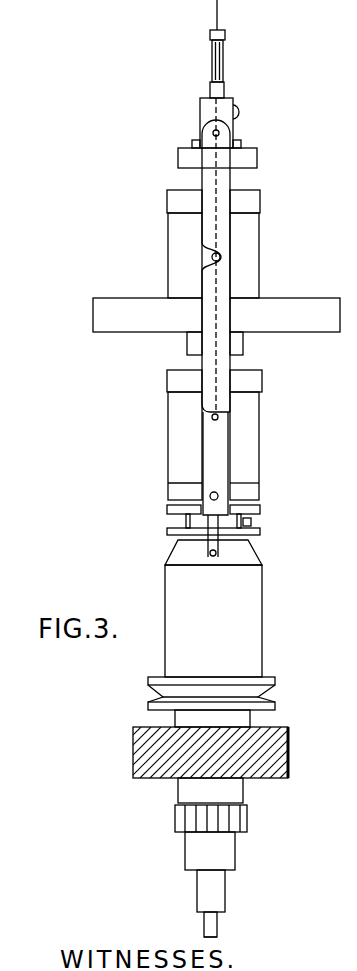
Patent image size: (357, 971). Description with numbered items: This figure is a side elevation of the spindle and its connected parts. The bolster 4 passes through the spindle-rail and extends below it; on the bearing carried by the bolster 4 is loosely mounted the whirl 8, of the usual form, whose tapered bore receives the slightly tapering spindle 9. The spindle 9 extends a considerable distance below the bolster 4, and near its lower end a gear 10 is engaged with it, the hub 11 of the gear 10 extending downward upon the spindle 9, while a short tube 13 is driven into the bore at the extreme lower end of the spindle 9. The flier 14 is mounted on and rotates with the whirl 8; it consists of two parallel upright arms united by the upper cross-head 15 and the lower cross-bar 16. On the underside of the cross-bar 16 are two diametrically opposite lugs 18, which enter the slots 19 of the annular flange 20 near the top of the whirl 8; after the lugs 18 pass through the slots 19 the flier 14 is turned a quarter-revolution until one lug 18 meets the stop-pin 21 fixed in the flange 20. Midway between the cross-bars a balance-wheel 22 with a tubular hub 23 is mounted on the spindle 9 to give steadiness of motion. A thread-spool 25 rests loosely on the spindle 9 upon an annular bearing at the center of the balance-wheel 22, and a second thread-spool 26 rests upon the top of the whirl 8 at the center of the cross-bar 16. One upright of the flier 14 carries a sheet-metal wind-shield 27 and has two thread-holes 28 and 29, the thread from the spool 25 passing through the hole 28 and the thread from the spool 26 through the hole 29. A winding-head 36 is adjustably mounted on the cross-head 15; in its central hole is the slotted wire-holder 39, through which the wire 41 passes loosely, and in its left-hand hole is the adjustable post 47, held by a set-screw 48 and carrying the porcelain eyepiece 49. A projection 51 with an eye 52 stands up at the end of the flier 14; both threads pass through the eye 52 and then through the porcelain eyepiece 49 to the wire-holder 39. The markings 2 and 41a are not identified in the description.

The upper end of axis line 41a is at (215, 17).
The wire-holder 39 is at (227, 33).
The porcelain eyepiece 49 is at (211, 66).
The adjustable post 47 is at (209, 90).
The winding-head 36 is at (199, 113).
The projection or eyepiece 51 is at (204, 130).
The eye or opening 52 is at (221, 133).
The set-screw 48 is at (242, 112).
The cross-head 15 is at (259, 158).
The wind-shield 27 is at (212, 343).
The thread-spool 25 is at (262, 205).
The thread-hole 28 is at (210, 257).
The balance-wheel 22 is at (107, 313).
The tubular hub 23 is at (245, 347).
The thread-spool 26 is at (263, 382).
The thread-hole 29 is at (211, 418).
The flier 14 is at (221, 447).
The lower cross-bar 16 is at (262, 510).
The stop-pin 21 is at (252, 522).
The annular flange 20 is at (165, 532).
The slots 19 is at (209, 545).
The lugs or hooks 18 is at (212, 557).
The whirl 8 is at (248, 663).
The bolster 4 is at (172, 716).
The base 2 is at (210, 752).
The gear 10 is at (226, 818).
The hub 11 is at (226, 851).
The spindle 9 is at (219, 891).
The short tube 13 is at (205, 927).
The wire 41 is at (213, 941).